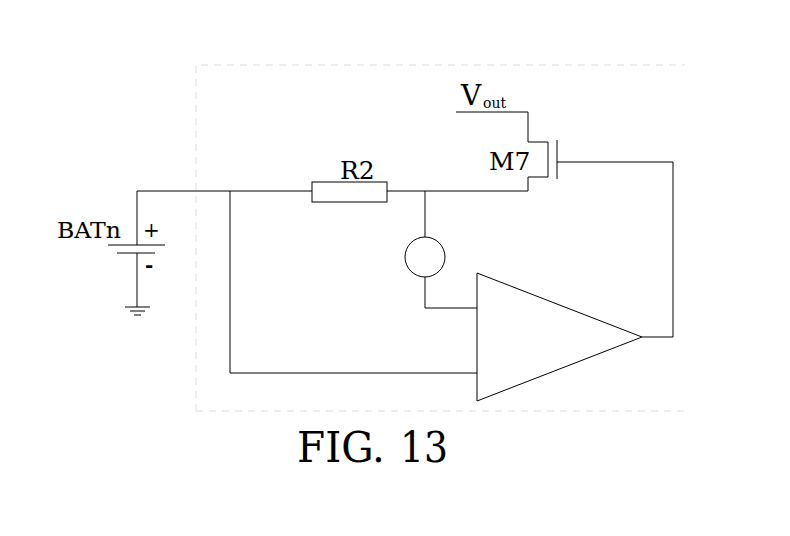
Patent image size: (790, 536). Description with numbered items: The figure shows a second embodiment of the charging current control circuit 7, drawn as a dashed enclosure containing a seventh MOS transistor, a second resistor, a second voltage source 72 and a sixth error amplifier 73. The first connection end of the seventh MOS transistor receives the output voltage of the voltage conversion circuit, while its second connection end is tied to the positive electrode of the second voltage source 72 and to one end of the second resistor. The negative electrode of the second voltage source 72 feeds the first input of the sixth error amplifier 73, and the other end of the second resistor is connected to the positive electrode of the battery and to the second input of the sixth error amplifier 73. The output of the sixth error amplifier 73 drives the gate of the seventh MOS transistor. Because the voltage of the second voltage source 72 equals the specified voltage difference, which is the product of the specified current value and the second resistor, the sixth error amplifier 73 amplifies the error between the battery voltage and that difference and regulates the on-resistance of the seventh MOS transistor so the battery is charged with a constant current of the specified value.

The charging current control circuit 7 is at (530, 65).
The second voltage source 72 is at (404, 256).
The sixth error amplifier 73 is at (533, 292).